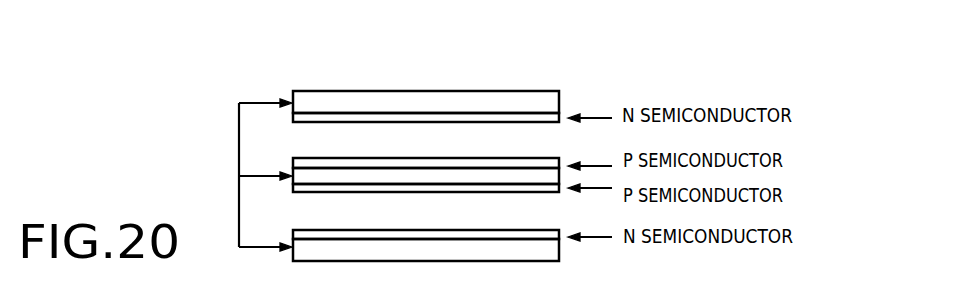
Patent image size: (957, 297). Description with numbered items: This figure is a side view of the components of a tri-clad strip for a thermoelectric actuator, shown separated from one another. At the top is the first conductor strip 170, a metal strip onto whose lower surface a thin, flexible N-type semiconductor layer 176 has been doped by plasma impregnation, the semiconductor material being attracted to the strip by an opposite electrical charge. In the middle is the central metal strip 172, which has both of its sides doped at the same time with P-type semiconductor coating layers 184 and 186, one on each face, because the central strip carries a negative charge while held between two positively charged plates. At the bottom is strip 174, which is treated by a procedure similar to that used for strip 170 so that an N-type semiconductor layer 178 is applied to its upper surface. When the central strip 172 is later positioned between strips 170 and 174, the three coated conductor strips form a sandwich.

The first conductor strip 170 is at (420, 102).
The N-type semiconductor layer 176 is at (513, 120).
The P-type semiconductor coating layer 184 is at (317, 162).
The central metal strip 172 is at (408, 178).
The P-type semiconductor coating layer 186 is at (507, 193).
The N-type semiconductor layer 178 is at (313, 234).
The conductor strip 174 is at (458, 253).